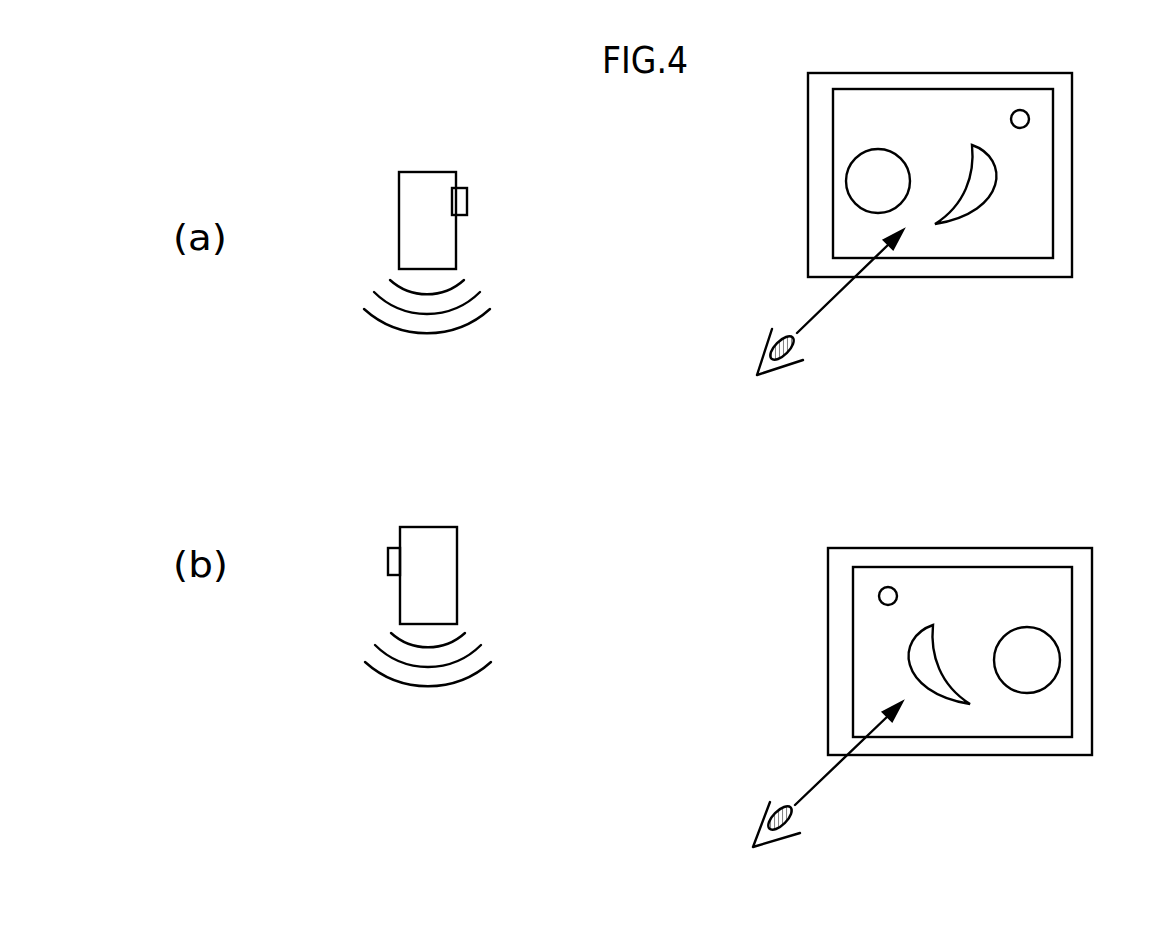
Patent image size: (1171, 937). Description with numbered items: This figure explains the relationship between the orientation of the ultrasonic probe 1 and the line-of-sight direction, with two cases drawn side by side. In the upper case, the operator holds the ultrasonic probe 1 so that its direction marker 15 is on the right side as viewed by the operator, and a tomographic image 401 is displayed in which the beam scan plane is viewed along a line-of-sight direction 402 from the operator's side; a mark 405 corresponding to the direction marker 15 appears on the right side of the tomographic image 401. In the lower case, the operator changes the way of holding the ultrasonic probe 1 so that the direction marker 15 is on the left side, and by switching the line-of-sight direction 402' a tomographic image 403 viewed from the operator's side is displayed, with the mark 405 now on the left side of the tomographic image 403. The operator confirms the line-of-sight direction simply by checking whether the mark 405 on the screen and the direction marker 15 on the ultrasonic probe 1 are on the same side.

The ultrasonic probe 1 is at (398, 182).
The direction marker 15 is at (467, 193).
The tomographic image 401 is at (837, 175).
The line-of-sight direction 402 is at (853, 306).
The mark 405 is at (1030, 119).
The tomographic image 403 is at (852, 663).
The line-of-sight direction 402' is at (804, 771).